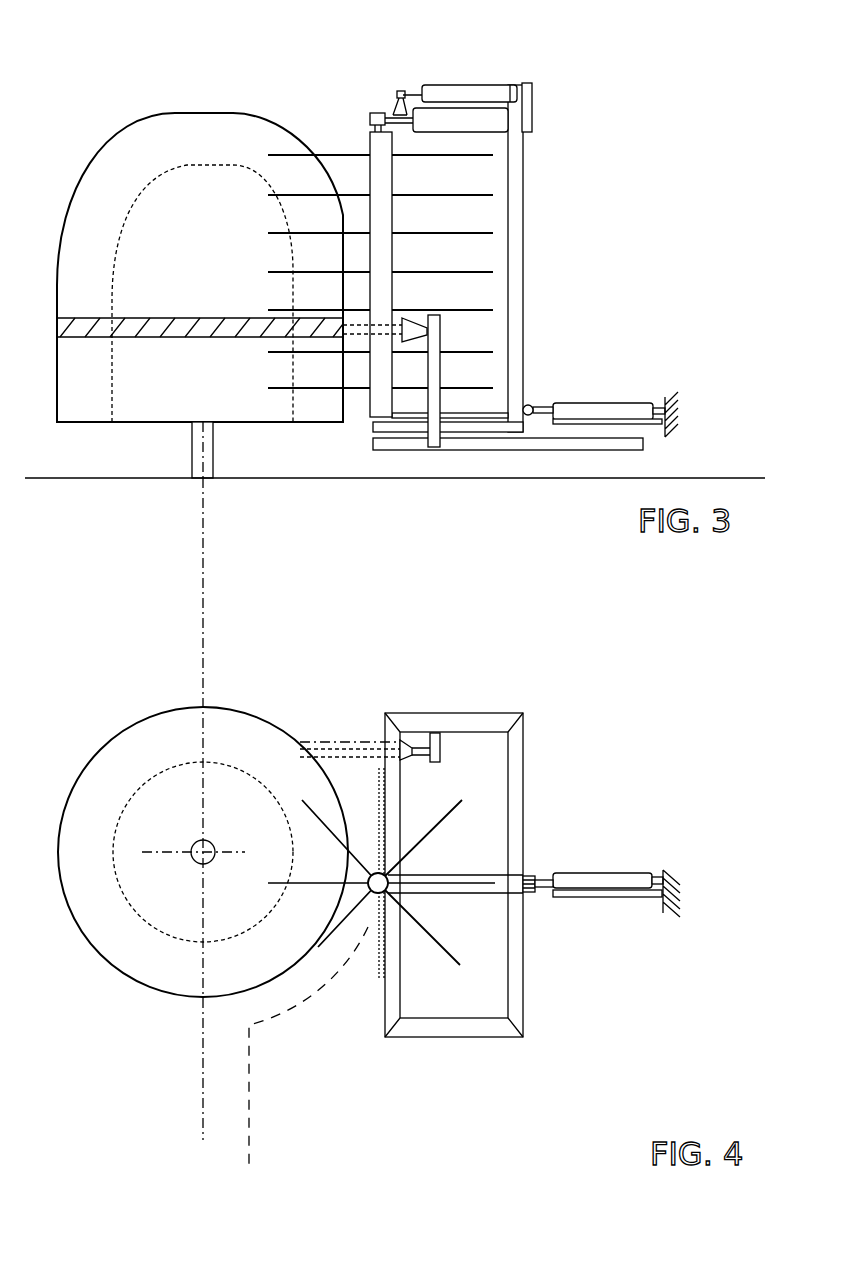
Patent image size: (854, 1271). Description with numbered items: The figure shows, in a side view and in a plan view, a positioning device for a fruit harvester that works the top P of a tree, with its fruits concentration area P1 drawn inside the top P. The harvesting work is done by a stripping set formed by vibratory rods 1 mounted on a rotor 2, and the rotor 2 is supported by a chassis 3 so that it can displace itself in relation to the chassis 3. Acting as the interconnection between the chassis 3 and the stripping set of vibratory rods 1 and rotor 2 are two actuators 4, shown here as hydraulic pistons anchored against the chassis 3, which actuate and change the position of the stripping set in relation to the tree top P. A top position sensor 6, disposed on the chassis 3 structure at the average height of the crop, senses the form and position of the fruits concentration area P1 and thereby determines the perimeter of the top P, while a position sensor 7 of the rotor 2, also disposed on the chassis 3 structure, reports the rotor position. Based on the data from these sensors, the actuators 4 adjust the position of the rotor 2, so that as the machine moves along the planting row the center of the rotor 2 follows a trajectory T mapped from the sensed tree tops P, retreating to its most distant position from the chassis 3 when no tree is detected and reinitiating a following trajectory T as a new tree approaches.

In FIG. 3, the vibratory rods 1 is at (485, 197).
In FIG. 4, the vibratory rods 1 is at (448, 952).
In FIG. 3, the rotor 2 is at (378, 147).
In FIG. 4, the rotor 2 is at (377, 895).
In FIG. 3, the chassis 3 is at (508, 311).
In FIG. 4, the chassis 3 is at (517, 797).
In FIG. 3, the actuators 4 is at (498, 88).
In FIG. 4, the actuators 4 is at (623, 878).
In FIG. 3, the top position sensor 6 is at (420, 325).
In FIG. 4, the top position sensor 6 is at (410, 742).
In FIG. 3, the position sensor of the rotor 7 is at (637, 420).
In FIG. 4, the position sensor of the rotor 7 is at (610, 895).
In FIG. 3, the tree top P is at (227, 113).
In FIG. 4, the tree top P is at (192, 707).
In FIG. 3, the fruits concentration area P1 is at (125, 175).
In FIG. 4, the fruits concentration area P1 is at (245, 742).
In FIG. 4, the trajectory T is at (248, 1077).